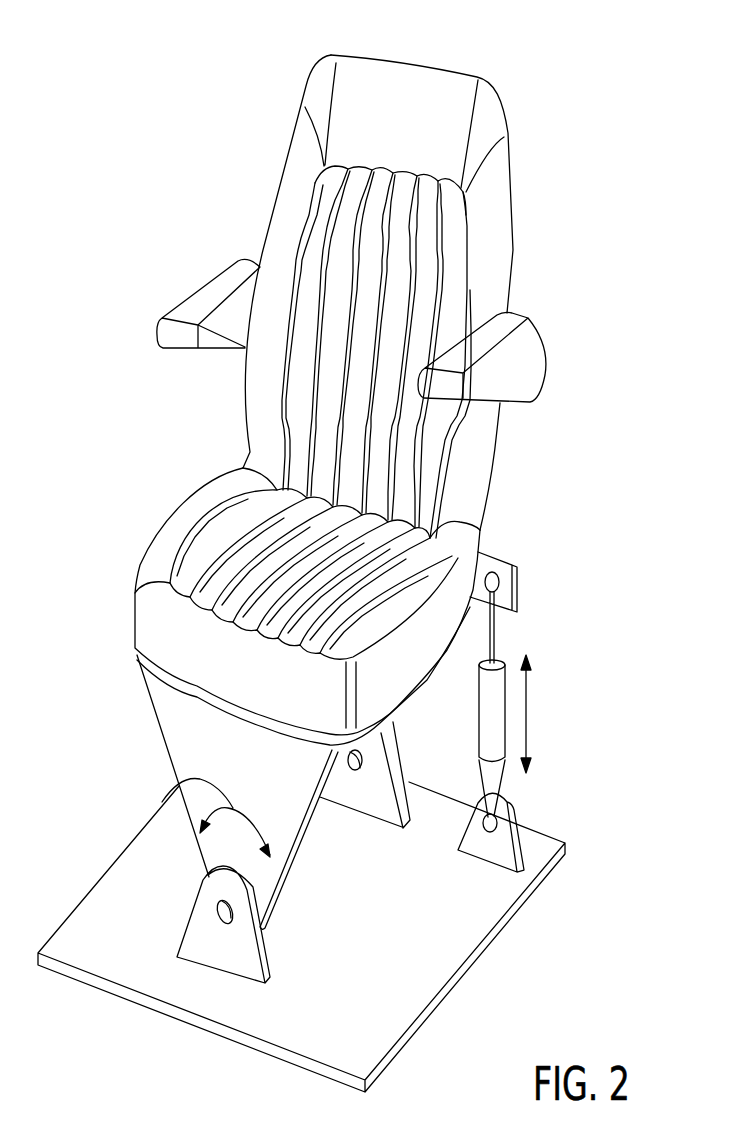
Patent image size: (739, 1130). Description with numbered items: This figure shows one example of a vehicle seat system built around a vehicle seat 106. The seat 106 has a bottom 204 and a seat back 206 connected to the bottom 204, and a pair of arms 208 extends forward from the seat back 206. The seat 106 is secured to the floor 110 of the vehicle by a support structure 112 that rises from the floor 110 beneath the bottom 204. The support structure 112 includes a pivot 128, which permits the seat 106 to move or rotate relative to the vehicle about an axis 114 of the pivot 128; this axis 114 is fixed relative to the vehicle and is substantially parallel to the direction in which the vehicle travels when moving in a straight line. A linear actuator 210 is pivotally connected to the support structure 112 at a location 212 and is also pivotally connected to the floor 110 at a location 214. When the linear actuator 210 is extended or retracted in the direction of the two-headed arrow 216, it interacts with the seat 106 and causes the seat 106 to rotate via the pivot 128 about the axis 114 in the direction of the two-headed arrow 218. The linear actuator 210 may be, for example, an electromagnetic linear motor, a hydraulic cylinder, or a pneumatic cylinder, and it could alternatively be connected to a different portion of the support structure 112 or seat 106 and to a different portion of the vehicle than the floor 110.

The seat 106 is at (245, 427).
The seat back 206 is at (401, 113).
The pair of arms 208 is at (208, 282).
The bottom 204 is at (132, 607).
The support structure 112 is at (167, 713).
The location 212 is at (493, 560).
The linear actuator 210 is at (505, 653).
The two-headed arrow 216 is at (527, 697).
The location 214 is at (506, 812).
The floor 110 is at (418, 958).
The pivot 128 is at (224, 960).
The axis 114 is at (217, 918).
The two-headed arrow 218 is at (162, 802).